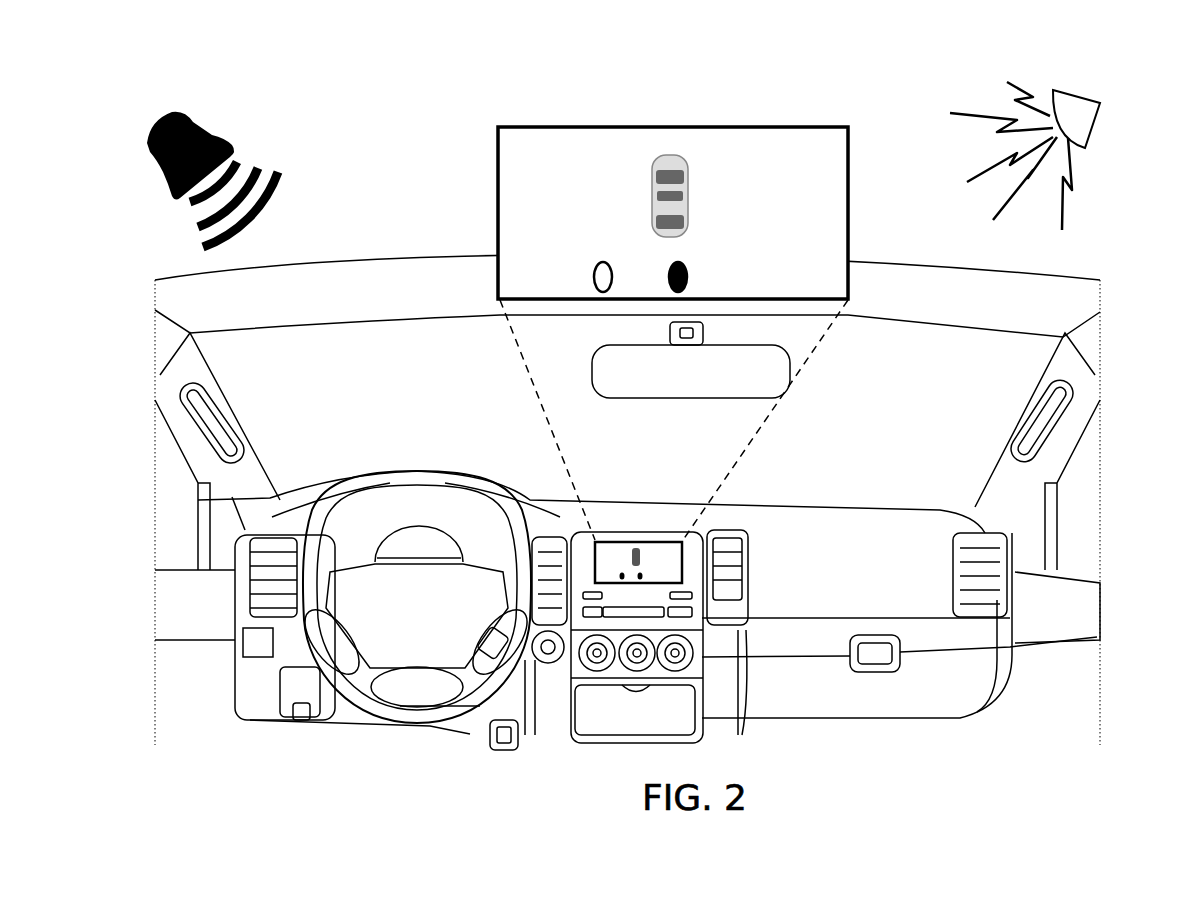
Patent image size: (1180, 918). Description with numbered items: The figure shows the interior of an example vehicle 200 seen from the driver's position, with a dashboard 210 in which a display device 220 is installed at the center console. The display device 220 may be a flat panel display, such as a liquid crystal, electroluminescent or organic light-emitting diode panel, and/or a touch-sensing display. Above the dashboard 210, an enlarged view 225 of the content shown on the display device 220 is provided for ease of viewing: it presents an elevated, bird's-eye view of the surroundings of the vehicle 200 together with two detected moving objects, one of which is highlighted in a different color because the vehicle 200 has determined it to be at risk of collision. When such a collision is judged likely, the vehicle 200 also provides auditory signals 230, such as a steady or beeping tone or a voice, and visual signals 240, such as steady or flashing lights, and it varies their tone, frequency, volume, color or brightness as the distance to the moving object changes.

The vehicle 200 is at (690, 196).
The dashboard 210 is at (720, 527).
The display device 220 is at (617, 540).
The enlarged view 225 is at (745, 127).
The auditory signals 230 is at (220, 135).
The visual signals 240 is at (1092, 137).